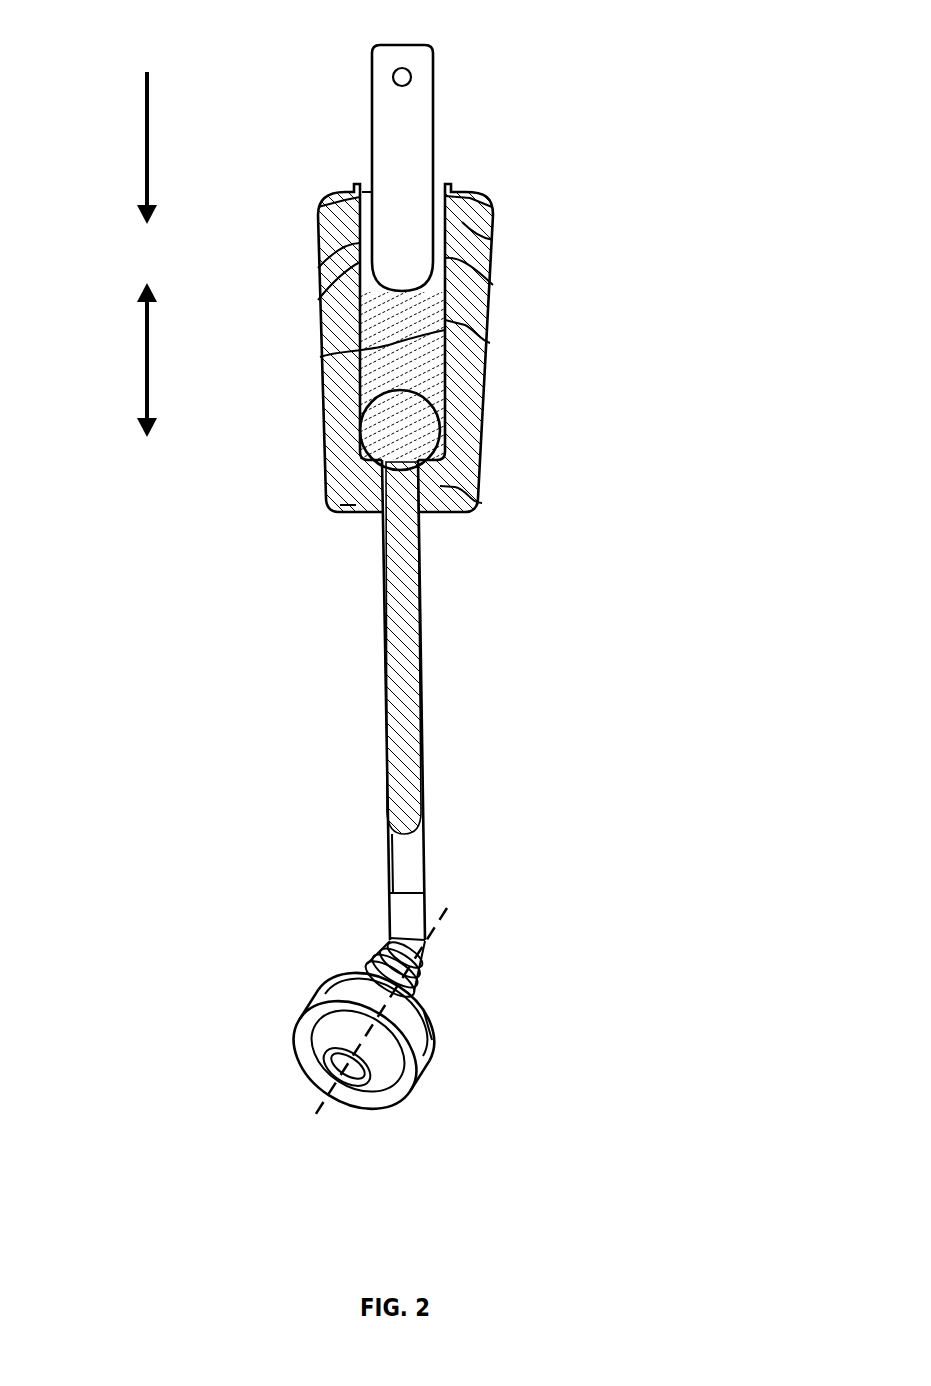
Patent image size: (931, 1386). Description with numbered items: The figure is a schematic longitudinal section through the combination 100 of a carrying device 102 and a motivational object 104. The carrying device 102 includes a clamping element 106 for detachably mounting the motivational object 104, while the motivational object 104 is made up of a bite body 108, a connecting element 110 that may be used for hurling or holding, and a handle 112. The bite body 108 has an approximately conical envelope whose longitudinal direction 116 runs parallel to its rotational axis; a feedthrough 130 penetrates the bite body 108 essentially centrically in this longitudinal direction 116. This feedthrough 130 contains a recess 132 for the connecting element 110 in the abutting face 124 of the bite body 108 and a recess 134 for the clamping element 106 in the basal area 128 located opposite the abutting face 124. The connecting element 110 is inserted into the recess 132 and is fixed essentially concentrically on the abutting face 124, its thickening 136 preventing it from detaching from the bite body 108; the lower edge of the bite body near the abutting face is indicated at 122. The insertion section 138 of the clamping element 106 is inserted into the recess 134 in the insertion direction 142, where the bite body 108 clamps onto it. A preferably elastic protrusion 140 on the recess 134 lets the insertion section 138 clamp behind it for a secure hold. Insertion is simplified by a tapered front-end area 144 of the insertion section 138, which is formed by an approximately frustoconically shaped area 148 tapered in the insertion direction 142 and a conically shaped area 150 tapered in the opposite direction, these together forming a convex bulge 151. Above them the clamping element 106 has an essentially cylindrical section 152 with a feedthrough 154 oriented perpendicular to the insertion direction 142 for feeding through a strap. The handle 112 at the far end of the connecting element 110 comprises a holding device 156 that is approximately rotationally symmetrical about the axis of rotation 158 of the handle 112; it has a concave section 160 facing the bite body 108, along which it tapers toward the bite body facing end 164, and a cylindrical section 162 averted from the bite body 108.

The combination 100 is at (720, 244).
The carrying device 102 is at (628, 138).
The motivational object 104 is at (668, 368).
The clamping element 106 is at (433, 109).
The bite body 108 is at (468, 386).
The connecting element 110 is at (408, 723).
The handle 112 is at (298, 1014).
The longitudinal direction 116 is at (147, 340).
The housing lower edge 122 is at (340, 506).
The abutting face 124 is at (455, 513).
The basal area 128 is at (338, 188).
The feedthrough 130 is at (490, 343).
The recess for the connecting element 132 is at (482, 503).
The recess for the clamping element 134 is at (318, 270).
The thickening 136 is at (415, 432).
The insertion section 138 is at (493, 285).
The protrusion 140 is at (318, 207).
The insertion direction 142 is at (147, 130).
The tapered front-end area 144 is at (320, 357).
The frustoconically shaped area 148 is at (335, 305).
The conically shaped area 150 is at (368, 187).
The convex bulge 151 is at (493, 240).
The cylindrical section 152 is at (433, 125).
The feedthrough 154 is at (411, 76).
The holding device 156 is at (328, 999).
The axis of rotation 158 is at (330, 1094).
The concave section 160 is at (423, 1016).
The cylindrical section 162 is at (417, 1050).
The bite body facing end 164 is at (427, 970).